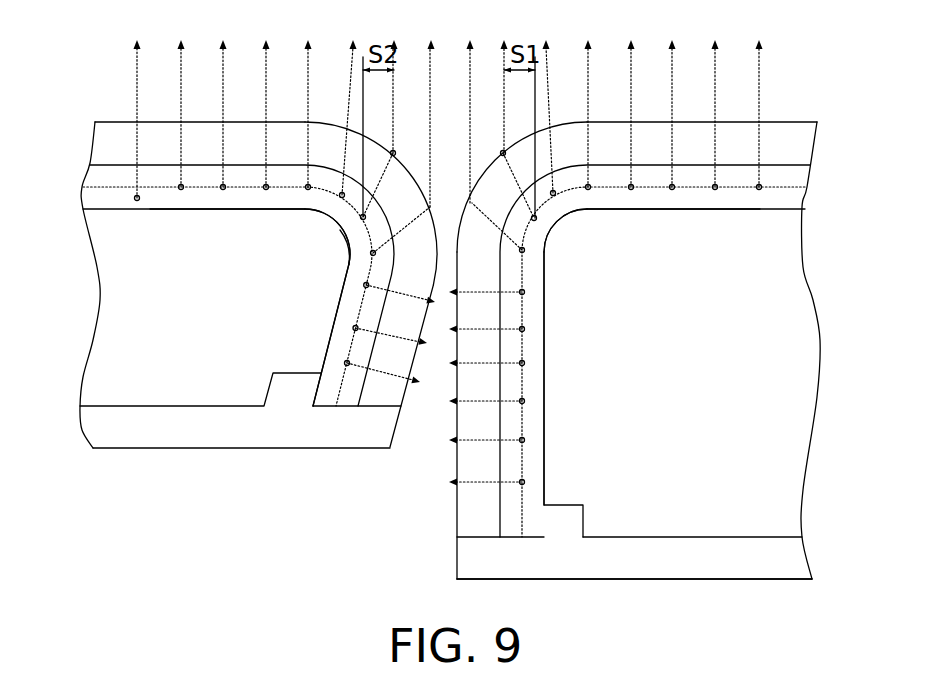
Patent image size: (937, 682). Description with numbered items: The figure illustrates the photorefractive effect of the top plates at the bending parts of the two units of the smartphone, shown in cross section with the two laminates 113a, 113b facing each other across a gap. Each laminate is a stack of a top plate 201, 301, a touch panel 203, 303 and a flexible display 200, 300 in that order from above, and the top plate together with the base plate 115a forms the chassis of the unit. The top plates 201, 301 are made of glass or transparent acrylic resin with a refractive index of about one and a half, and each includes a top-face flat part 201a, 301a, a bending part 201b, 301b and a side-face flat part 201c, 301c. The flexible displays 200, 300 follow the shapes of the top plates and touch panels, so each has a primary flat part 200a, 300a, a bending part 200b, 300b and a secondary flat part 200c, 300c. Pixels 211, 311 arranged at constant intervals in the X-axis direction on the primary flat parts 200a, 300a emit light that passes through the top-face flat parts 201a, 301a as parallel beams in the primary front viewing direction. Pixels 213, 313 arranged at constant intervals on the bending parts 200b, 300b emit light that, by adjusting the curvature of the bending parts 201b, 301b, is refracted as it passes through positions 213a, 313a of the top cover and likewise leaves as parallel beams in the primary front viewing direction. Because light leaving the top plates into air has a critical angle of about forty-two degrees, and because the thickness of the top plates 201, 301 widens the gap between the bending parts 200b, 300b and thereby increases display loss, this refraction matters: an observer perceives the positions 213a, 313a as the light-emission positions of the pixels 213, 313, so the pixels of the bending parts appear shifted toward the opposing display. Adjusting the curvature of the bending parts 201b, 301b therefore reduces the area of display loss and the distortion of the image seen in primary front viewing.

The laminate 113a is at (795, 92).
The laminate 113b is at (95, 92).
The base plate 115a is at (670, 579).
The flexible display 200 is at (797, 205).
The primary flat part 200a is at (642, 188).
The bending part 200b is at (547, 207).
The secondary flat part 200c is at (525, 423).
The top plate 201 is at (798, 130).
The top-face flat part 201a is at (642, 121).
The bending part 201b is at (540, 122).
The side-face flat part 201c is at (456, 460).
The touch panel 203 is at (797, 181).
The pixel 211 is at (673, 188).
The pixel 213 is at (547, 233).
The position 213a is at (502, 152).
The flexible display 300 is at (98, 203).
The primary flat part 300a is at (195, 188).
The bending part 300b is at (342, 209).
The secondary flat part 300c is at (354, 328).
The top plate 301 is at (100, 132).
The top-face flat part 301a is at (148, 121).
The bending part 301b is at (376, 141).
The side-face flat part 301c is at (410, 390).
The touch panel 303 is at (98, 182).
The pixel 311 is at (223, 188).
The pixel 313 is at (338, 257).
The position 313a is at (350, 218).